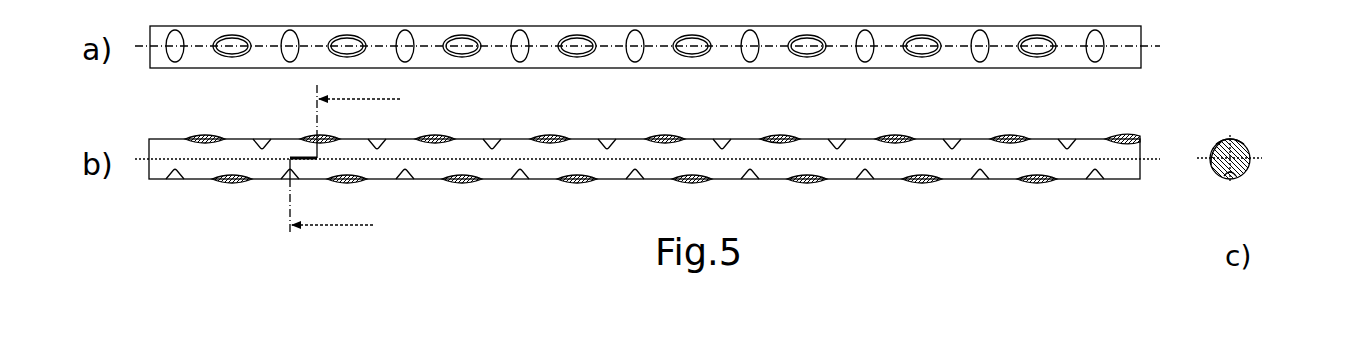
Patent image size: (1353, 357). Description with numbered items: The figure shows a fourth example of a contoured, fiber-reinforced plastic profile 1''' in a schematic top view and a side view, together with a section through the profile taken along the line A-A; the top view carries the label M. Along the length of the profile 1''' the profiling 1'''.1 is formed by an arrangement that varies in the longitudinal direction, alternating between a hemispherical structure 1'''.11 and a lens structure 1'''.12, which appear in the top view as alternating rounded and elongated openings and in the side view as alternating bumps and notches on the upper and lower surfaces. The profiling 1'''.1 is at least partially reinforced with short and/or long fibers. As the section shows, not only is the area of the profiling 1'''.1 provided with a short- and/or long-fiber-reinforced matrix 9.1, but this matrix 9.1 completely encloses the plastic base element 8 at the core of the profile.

The rod / mandrel M is at (1160, 44).
The contoured, fiber-reinforced plastic profile 1''' is at (666, 155).
The profiling 1'''.1 is at (1023, 89).
The hemispherical structure 1'''.11 is at (1105, 116).
The lens structure 1'''.12 is at (1045, 158).
The plastic base element 8 is at (1250, 162).
The short- and/or long-fiber-reinforced matrix 9.1 is at (1214, 170).